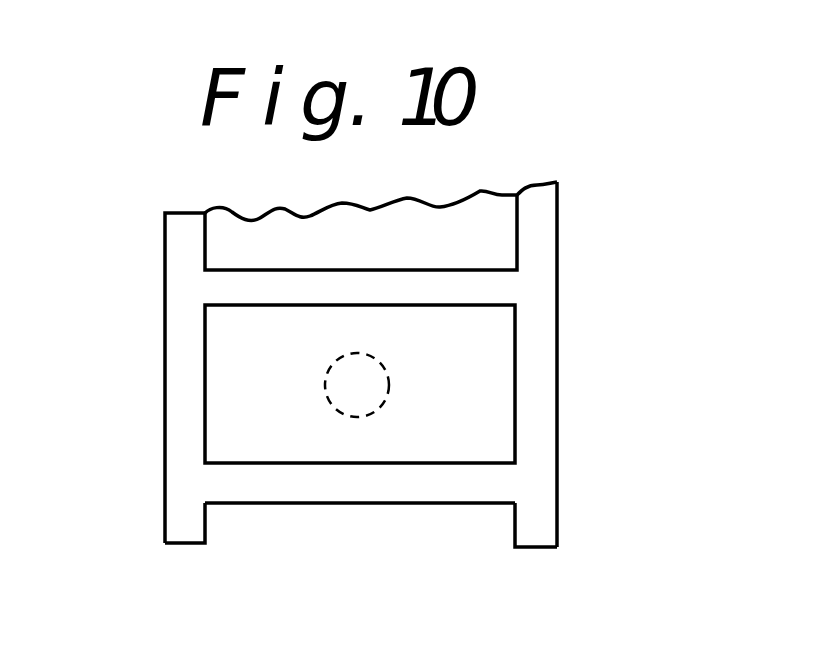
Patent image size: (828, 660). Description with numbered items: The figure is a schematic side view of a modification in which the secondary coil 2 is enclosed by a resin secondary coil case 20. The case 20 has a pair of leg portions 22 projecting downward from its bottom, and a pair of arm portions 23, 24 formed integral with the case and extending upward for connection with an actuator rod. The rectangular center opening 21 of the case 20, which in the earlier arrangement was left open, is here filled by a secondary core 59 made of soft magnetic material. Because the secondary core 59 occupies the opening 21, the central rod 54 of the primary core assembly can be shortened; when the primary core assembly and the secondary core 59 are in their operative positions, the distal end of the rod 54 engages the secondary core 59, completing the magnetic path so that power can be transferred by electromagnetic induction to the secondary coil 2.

The secondary coil 2 is at (558, 455).
The secondary coil case 20 is at (542, 381).
The center opening 21 is at (435, 443).
The leg portions 22 is at (182, 528).
The arm portion 23 is at (182, 273).
The arm portion 24 is at (540, 233).
The central rod portion 54 is at (325, 382).
The secondary core 59 is at (250, 437).